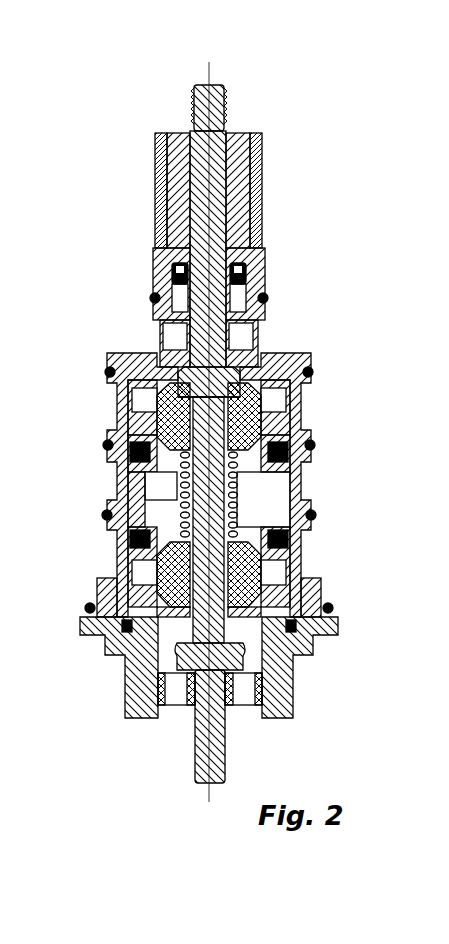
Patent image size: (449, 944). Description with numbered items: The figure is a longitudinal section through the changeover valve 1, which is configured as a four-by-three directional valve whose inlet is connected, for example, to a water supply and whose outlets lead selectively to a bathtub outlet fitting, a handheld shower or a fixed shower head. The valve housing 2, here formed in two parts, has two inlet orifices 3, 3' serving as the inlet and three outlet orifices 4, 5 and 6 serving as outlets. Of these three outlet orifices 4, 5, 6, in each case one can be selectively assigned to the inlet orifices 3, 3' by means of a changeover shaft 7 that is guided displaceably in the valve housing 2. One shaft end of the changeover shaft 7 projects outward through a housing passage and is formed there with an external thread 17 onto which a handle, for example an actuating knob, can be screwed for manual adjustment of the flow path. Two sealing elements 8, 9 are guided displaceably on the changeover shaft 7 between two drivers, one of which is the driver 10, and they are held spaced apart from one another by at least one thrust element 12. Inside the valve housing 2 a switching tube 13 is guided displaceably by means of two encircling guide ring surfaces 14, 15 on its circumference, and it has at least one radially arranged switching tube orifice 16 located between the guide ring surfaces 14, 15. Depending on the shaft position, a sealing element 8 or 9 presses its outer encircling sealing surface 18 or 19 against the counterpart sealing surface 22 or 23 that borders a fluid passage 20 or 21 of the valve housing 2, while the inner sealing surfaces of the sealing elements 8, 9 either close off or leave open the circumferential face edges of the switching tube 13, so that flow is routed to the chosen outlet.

The changeover valve 1 is at (366, 256).
The valve housing 2 is at (242, 211).
The inlet orifice 3 is at (241, 567).
The inlet orifice 3' is at (225, 485).
The outlet orifice 4 is at (165, 737).
The outlet orifice 5 is at (268, 487).
The outlet orifice 6 is at (246, 340).
The changeover shaft 7 is at (218, 243).
The sealing element 8 is at (266, 522).
The sealing element 9 is at (155, 418).
The driver 10 is at (245, 660).
The thrust element 12 is at (244, 495).
The switching tube 13 is at (150, 494).
The guide ring surface 14 is at (128, 535).
The guide ring surface 15 is at (292, 430).
The switching tube orifice 16 is at (161, 486).
The external thread 17 is at (231, 97).
The encircling sealing surface 18 is at (312, 596).
The encircling sealing surface 19 is at (280, 363).
The fluid passage 20 is at (165, 572).
The fluid passage 21 is at (160, 340).
The counterpart sealing surface 22 is at (162, 598).
The counterpart sealing surface 23 is at (152, 323).